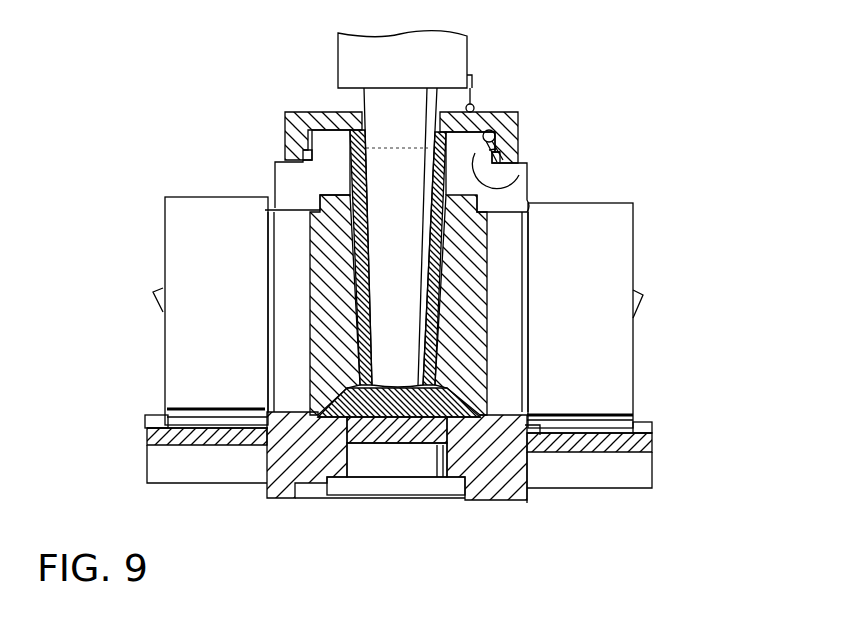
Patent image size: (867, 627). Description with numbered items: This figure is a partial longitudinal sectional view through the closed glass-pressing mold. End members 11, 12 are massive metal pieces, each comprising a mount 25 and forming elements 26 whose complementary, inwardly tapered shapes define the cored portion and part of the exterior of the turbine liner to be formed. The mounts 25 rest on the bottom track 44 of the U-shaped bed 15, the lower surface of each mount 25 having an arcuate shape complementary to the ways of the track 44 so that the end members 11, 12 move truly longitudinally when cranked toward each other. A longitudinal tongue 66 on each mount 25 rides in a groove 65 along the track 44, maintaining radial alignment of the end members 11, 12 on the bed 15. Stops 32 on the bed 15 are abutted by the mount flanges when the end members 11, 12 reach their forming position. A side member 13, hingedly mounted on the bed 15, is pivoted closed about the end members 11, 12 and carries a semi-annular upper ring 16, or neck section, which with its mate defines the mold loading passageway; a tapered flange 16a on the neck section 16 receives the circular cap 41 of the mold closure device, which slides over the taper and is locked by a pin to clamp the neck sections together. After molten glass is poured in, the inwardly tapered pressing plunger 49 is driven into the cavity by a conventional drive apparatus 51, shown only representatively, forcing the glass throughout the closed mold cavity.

The drive apparatus 51 is at (415, 74).
The pressing plunger 49 is at (415, 137).
The circular cap 41 is at (284, 133).
The end member 11 is at (236, 197).
The end member 12 is at (568, 202).
The side member 13 is at (525, 187).
The upper ring 16 is at (522, 170).
The flange 16a is at (519, 131).
The forming elements 26 is at (349, 262).
The mount 25 is at (236, 259).
The bottom track 44 is at (150, 416).
The longitudinal tongue 66 is at (215, 425).
The groove 65 is at (147, 426).
The bed 15 is at (604, 484).
The stops 32 is at (525, 445).